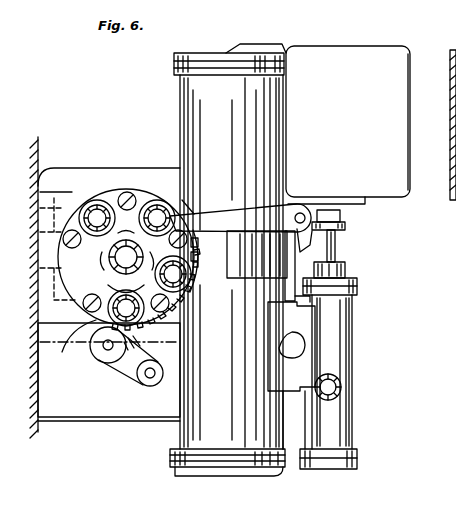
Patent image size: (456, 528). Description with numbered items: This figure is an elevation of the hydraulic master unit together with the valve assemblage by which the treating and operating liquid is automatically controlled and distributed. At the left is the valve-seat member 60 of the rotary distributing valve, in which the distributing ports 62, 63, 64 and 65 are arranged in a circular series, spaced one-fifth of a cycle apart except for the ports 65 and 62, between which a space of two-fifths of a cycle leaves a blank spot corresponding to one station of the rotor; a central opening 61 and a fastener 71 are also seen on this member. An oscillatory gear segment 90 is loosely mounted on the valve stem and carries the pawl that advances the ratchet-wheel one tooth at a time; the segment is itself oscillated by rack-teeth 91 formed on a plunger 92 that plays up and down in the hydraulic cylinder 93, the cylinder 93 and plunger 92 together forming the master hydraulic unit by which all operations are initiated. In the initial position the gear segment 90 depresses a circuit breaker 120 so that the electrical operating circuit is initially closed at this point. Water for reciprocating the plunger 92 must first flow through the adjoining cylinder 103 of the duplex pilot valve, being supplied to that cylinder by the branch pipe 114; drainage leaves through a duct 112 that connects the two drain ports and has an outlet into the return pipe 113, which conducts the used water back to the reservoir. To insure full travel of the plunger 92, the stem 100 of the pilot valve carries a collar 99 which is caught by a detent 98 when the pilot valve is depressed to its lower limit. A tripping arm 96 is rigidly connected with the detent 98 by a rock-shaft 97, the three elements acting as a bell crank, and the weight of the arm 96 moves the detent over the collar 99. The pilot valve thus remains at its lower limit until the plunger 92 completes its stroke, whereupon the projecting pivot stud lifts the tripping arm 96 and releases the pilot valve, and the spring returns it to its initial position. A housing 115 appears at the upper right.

The valve-seat member 60 is at (72, 220).
The central bore 61 is at (110, 259).
The distributing port 62 is at (109, 349).
The distributing port 63 is at (168, 278).
The distributing port 64 is at (158, 212).
The distributing port 65 is at (97, 210).
The screw 71 is at (133, 194).
The oscillatory gear segment 90 is at (146, 326).
The rack-teeth 91 is at (200, 243).
The plunger 92 is at (200, 258).
The hydraulic cylinder 93 is at (191, 117).
The tripping arm 96 is at (288, 215).
The rock-shaft 97 is at (303, 213).
The detent 98 is at (331, 240).
The collar 99 is at (340, 224).
The stem 100 is at (337, 253).
The cylinder 103 is at (352, 346).
The duct 112 is at (447, 191).
The return pipe 113 is at (341, 385).
The branch pipe 114 is at (292, 340).
The box 115 is at (394, 46).
The circuit breaker 120 is at (109, 352).